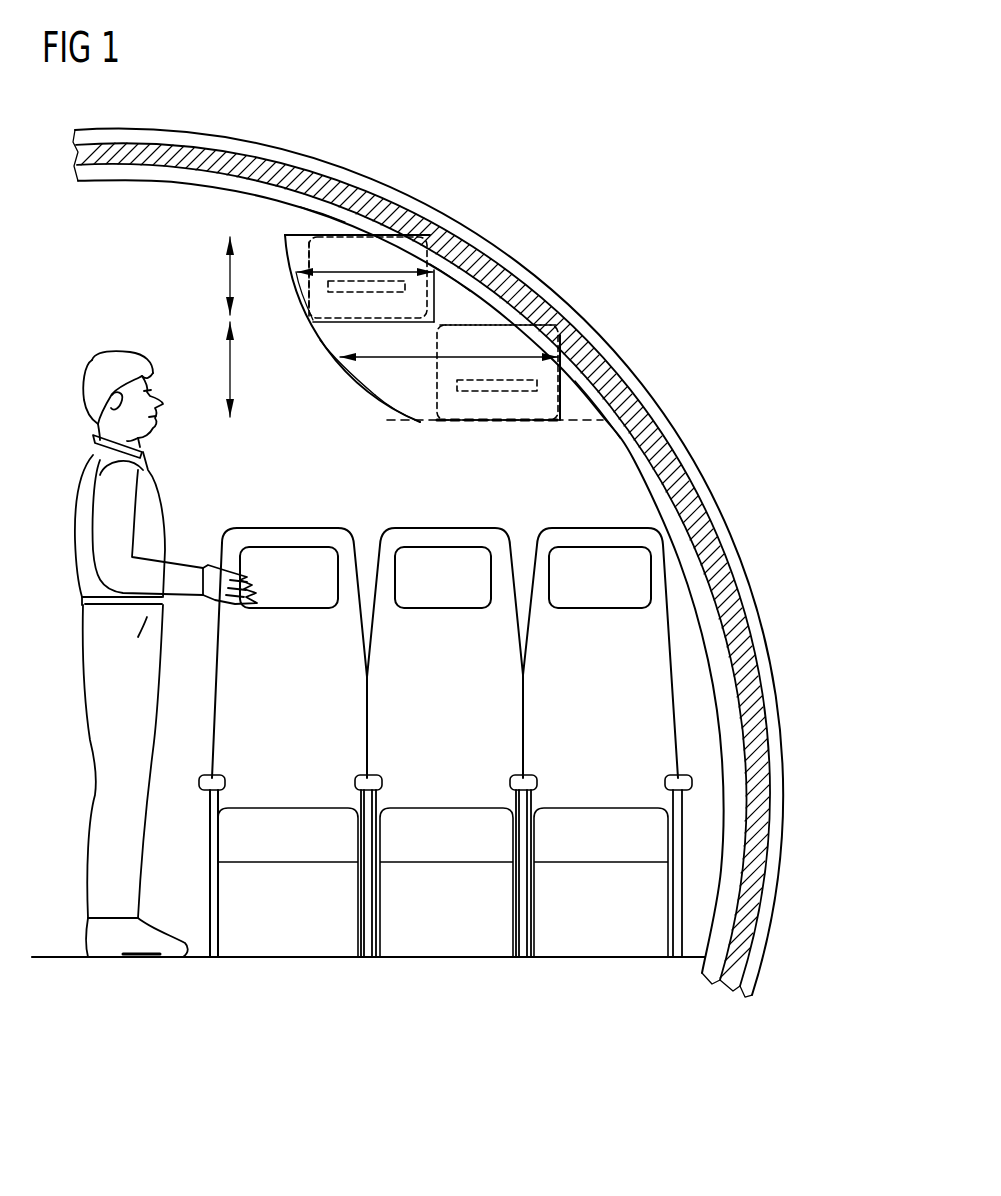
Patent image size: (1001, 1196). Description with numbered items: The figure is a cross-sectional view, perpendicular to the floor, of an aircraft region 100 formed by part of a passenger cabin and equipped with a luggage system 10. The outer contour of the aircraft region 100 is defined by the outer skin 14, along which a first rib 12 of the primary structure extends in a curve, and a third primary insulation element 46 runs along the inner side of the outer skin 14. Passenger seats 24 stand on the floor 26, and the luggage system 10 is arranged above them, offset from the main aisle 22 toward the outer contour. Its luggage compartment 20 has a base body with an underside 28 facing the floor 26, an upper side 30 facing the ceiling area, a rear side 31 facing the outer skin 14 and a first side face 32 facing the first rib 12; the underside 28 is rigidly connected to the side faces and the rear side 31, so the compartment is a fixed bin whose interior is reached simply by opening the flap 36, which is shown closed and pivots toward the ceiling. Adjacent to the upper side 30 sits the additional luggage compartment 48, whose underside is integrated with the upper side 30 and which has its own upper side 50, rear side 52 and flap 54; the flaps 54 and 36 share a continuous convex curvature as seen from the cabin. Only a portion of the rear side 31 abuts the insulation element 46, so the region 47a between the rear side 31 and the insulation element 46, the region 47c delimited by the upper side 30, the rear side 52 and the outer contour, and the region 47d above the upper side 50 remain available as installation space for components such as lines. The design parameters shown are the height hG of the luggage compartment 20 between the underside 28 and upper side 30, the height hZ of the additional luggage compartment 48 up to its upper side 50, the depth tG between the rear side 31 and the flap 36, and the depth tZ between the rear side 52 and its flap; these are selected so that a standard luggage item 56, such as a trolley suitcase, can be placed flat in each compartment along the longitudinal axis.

The aircraft region 100 is at (655, 226).
The luggage system 10 is at (553, 186).
The first rib 12 is at (195, 181).
The outer skin 14 is at (565, 300).
The third primary insulation element 46 is at (700, 508).
The region 47a is at (580, 403).
The region 47c is at (468, 290).
The region 47d is at (321, 226).
The luggage compartment 20 is at (337, 332).
The main aisle 22 is at (66, 938).
The passenger seats 24 is at (572, 945).
The floor 26 is at (200, 957).
The underside 28 is at (441, 416).
The upper side 30 is at (320, 320).
The rear side 31 is at (563, 404).
The first side face 32 is at (390, 368).
The flap 36 is at (342, 370).
The additional luggage compartment 48 is at (303, 246).
The upper side 50 is at (310, 230).
The rear side 52 is at (445, 270).
The flap 54 is at (307, 288).
The standard luggage items 56 is at (408, 256).
The maximum dimension of the additional luggage compartment base body hZ is at (228, 280).
The maximum dimension of the luggage compartment hG is at (228, 376).
The maximum dimension of the additional luggage compartment base body tZ is at (390, 272).
The maximum dimension of the luggage compartment base body tG is at (442, 357).